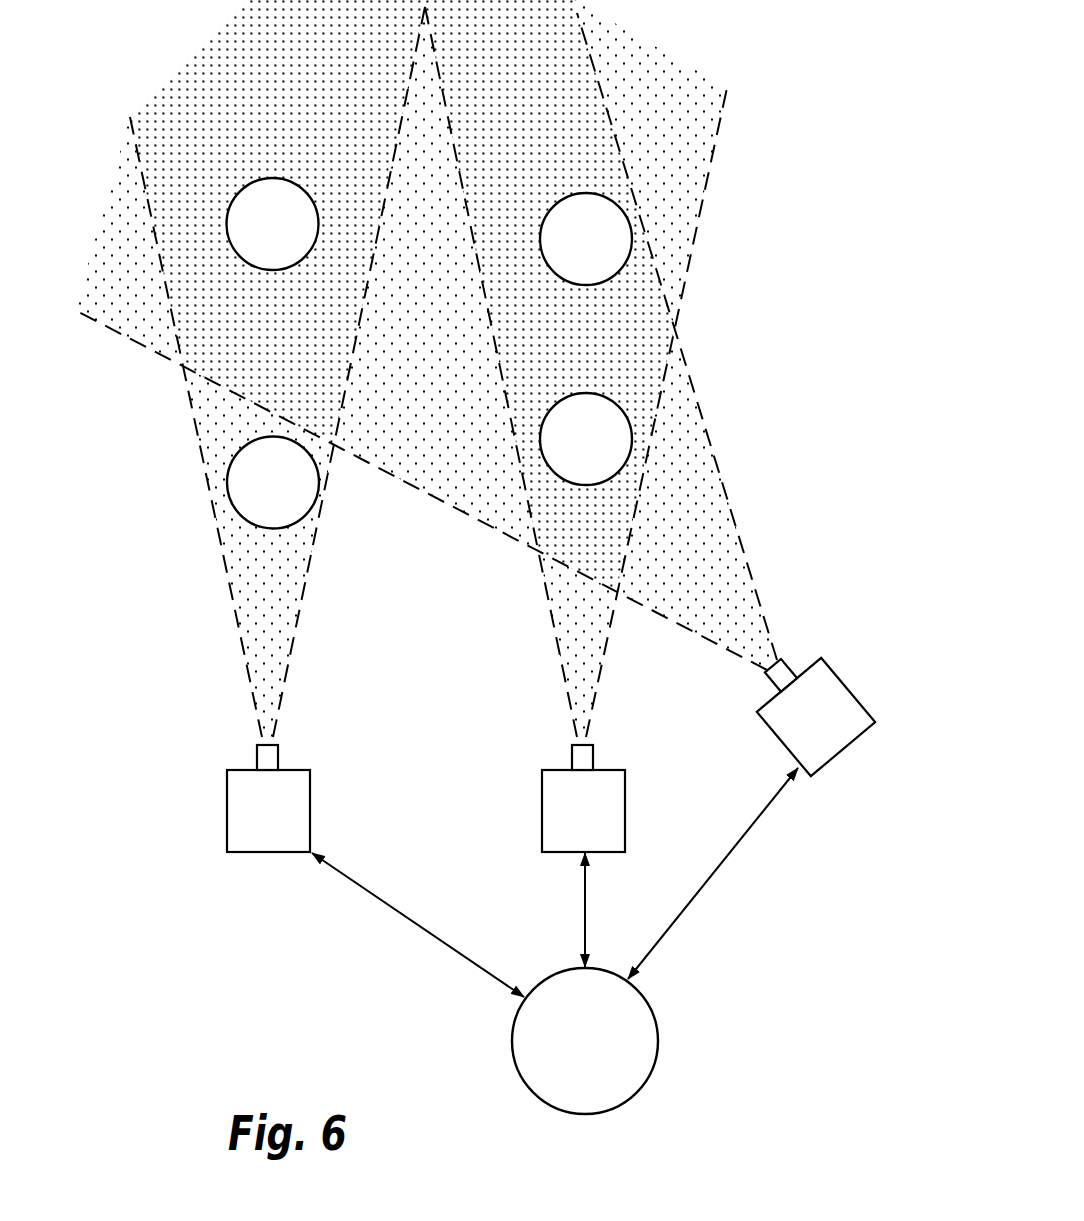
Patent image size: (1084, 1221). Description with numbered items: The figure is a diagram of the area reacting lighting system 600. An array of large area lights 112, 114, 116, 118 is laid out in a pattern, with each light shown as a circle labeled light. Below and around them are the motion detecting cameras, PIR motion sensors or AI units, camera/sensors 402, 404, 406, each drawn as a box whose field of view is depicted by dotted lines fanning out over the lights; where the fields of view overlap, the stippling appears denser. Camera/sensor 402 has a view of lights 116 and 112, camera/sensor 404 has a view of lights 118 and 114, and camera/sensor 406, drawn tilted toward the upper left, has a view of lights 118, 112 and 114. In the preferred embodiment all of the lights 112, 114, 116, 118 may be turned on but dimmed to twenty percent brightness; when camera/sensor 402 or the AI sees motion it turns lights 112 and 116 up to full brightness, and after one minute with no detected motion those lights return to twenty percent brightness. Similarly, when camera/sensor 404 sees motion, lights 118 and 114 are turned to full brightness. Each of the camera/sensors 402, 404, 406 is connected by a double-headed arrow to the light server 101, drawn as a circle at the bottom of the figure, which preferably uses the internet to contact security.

The area reacting lighting system 600 is at (804, 161).
The large area light 112 is at (227, 213).
The large area light 114 is at (631, 257).
The large area light 116 is at (240, 515).
The large area light 118 is at (623, 405).
The camera/sensor 402 is at (227, 797).
The camera/sensor 404 is at (542, 797).
The camera/sensor 406 is at (852, 697).
The light server 101 is at (653, 1065).